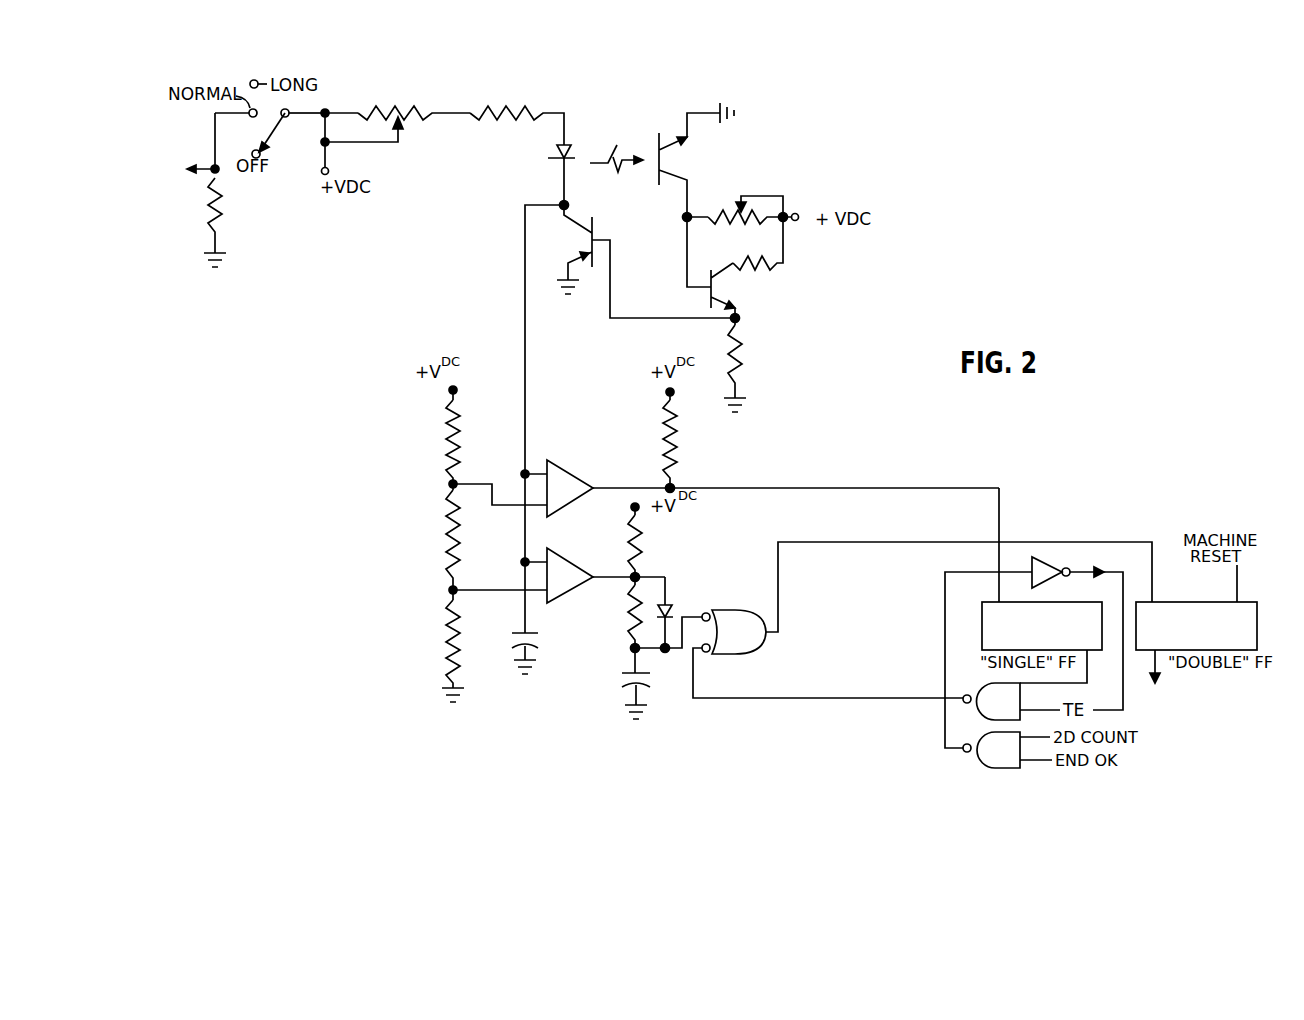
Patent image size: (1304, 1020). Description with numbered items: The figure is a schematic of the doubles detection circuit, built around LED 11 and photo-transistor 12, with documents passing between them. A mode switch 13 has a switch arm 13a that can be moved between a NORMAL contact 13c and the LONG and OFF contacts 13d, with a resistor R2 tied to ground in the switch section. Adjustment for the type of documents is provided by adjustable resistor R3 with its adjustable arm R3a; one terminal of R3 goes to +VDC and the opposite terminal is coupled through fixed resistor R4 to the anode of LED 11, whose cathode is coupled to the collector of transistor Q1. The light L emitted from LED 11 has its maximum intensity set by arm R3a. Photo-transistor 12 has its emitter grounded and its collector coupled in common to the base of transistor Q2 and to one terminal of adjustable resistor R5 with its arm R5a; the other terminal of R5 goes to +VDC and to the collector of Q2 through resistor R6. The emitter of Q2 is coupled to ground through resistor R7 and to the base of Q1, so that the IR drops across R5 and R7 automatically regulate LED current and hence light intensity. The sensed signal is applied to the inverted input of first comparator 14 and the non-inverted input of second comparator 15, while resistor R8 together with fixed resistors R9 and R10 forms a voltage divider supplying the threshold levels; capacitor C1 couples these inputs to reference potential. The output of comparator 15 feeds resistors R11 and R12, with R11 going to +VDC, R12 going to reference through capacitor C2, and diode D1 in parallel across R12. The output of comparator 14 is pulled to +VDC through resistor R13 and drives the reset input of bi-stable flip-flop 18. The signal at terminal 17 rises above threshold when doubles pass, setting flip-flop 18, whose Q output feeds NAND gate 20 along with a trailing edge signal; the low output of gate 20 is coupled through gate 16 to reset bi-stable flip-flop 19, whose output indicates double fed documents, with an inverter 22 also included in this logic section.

The doubles detection switch 13 is at (281, 138).
The switch arm 13a is at (280, 122).
The switch contact 13c is at (253, 118).
The switch contact 13d is at (254, 80).
The resistor R2 is at (209, 203).
The adjustable resistor R3 is at (383, 88).
The adjustable arm R3a is at (386, 134).
The fixed resistor R4 is at (494, 122).
The LED 11 is at (575, 137).
The light L is at (625, 129).
The photo-transistor 12 is at (677, 126).
The transistor Q1 is at (595, 228).
The adjustable resistor R5 is at (727, 210).
The adjustable arm of resistor R5 R5a is at (760, 193).
The resistor R6 is at (732, 262).
The transistor Q2 is at (722, 284).
The resistor R7 is at (743, 346).
The resistor R8 is at (446, 434).
The fixed resistor R9 is at (446, 537).
The fixed resistor R10 is at (446, 642).
The first comparator 14 is at (582, 477).
The second comparator 15 is at (556, 560).
The resistor R13 is at (678, 444).
The resistor R11 is at (656, 546).
The resistor R12 is at (631, 625).
The diode D1 is at (672, 605).
The capacitor C1 is at (540, 653).
The capacitor C2 is at (650, 683).
The NAND gate 16 is at (749, 650).
The output terminal 17 is at (744, 610).
The bi-stable flip-flop 18 is at (1031, 637).
The bi-stable flip-flop 19 is at (1186, 637).
The NAND gate 20 is at (985, 683).
The inverter 22 is at (1048, 582).